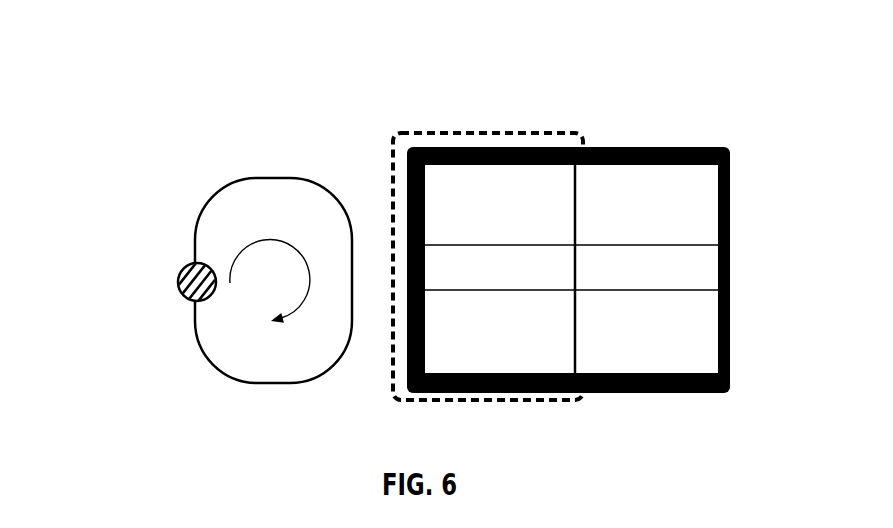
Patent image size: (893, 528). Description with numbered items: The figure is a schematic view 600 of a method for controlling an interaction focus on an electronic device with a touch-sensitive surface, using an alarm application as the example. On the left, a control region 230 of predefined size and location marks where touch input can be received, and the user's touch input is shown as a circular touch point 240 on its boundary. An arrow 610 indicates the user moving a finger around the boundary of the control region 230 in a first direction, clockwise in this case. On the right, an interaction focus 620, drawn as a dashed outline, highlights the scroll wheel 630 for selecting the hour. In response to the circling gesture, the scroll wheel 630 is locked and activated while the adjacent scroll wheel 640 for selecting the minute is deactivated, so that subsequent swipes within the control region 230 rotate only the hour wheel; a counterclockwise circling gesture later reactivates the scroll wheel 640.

The user interface with time picker 600 is at (186, 95).
The control region 230 is at (208, 208).
The touch point 240 is at (182, 277).
The arrow 610 is at (270, 298).
The interaction focus 620 is at (393, 148).
The scroll wheel 630 is at (562, 145).
The scroll wheel 640 is at (695, 140).